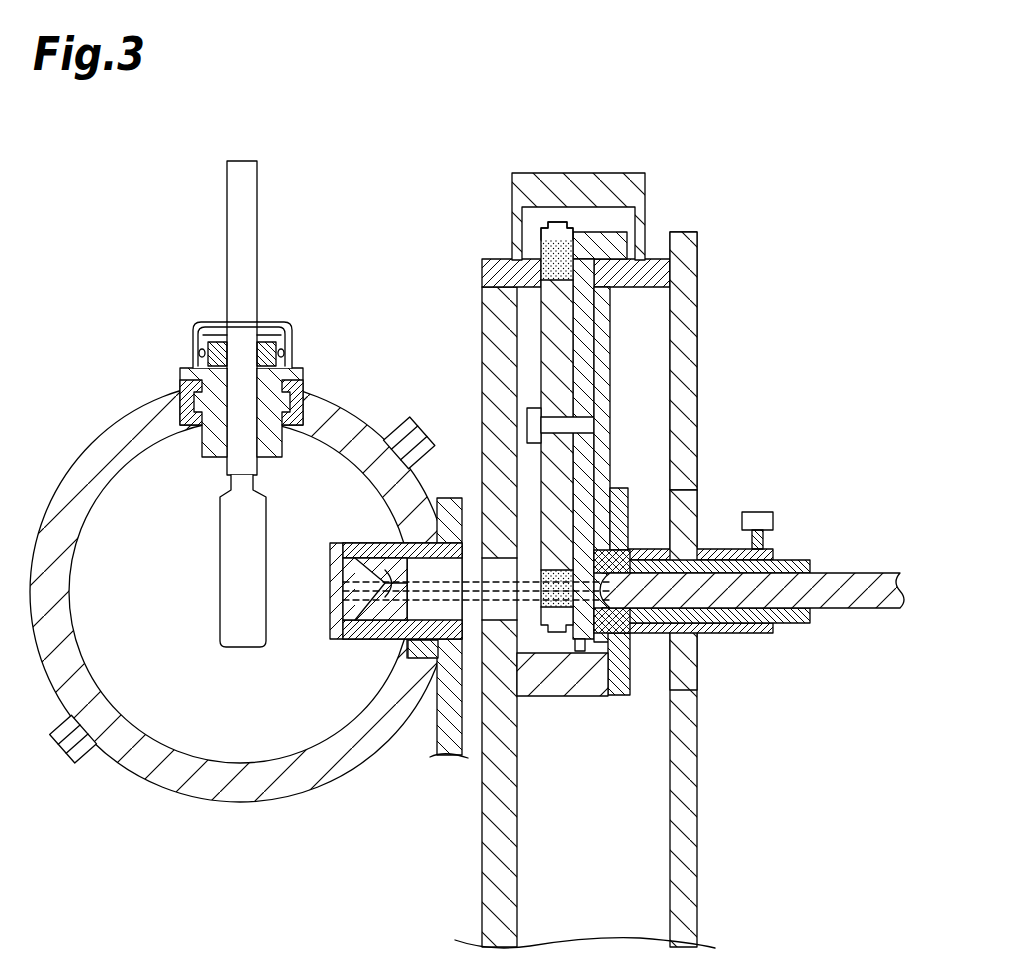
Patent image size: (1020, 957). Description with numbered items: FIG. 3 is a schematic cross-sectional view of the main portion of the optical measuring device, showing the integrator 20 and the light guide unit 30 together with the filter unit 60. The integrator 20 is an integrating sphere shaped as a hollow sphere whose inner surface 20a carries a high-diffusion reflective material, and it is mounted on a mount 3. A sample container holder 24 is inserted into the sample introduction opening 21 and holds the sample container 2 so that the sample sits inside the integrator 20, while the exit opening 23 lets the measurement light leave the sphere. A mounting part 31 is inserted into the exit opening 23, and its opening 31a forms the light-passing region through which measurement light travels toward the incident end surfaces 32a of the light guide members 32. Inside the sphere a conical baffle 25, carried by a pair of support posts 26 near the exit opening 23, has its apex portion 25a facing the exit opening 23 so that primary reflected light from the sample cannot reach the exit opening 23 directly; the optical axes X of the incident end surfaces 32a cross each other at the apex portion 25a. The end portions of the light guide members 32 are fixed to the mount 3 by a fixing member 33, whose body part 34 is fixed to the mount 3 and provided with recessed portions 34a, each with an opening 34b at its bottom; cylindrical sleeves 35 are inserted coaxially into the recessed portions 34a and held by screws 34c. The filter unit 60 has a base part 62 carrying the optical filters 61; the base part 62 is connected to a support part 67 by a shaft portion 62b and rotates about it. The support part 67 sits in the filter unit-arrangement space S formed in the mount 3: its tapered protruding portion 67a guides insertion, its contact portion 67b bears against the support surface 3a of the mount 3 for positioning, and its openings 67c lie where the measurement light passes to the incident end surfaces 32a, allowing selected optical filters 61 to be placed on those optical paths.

The sample container 2 is at (258, 235).
The mount 3 is at (538, 170).
The support surface 3a is at (645, 232).
The integrator 20 is at (100, 428).
The inner surface 20a is at (82, 553).
The sample introduction opening 21 is at (185, 378).
The exit opening 23 is at (430, 540).
The sample container holder 24 is at (292, 348).
The baffle 25 is at (334, 546).
The apex portion 25a is at (392, 560).
The support posts 26 is at (350, 546).
The light guide unit 30 is at (882, 562).
The mounting part 31 is at (446, 758).
The opening 31a is at (418, 658).
The light guide members 32 is at (845, 580).
The incident end surfaces 32a is at (616, 488).
The fixing member 33 is at (762, 638).
The body part 34 is at (711, 599).
The recessed portions 34a is at (740, 634).
The opening 34b is at (665, 660).
The screws 34c is at (778, 515).
The sleeves 35 is at (790, 560).
The filter unit 60 is at (536, 228).
The optical filters 61 is at (524, 260).
The base part 62 is at (548, 222).
The shaft portion 62b is at (527, 412).
The support part 67 is at (582, 235).
The protruding portion 67a is at (586, 655).
The contact portion 67b is at (640, 208).
The openings 67c is at (598, 680).
The filter unit-arrangement space S is at (521, 352).
The optical axis X is at (527, 660).